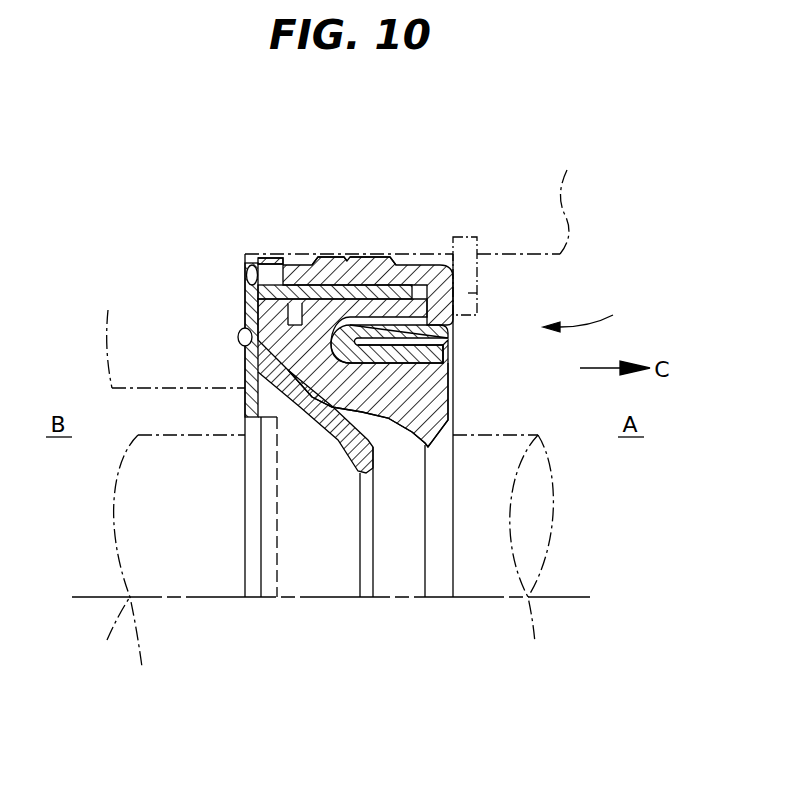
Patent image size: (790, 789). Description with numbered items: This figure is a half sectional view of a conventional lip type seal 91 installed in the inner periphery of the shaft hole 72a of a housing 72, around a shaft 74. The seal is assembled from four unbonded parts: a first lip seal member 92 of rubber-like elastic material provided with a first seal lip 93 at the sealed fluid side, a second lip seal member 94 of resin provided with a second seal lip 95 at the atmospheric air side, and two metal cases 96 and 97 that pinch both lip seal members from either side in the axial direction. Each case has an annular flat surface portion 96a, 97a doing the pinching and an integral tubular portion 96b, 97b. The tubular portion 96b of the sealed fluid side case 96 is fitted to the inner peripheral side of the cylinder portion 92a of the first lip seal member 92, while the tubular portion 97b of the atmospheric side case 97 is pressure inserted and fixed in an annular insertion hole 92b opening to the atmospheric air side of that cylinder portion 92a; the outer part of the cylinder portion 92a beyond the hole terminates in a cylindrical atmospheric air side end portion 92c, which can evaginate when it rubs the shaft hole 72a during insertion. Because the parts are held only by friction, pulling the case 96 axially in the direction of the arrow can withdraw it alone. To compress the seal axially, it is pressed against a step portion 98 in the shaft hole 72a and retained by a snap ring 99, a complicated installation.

The housing 72 is at (557, 193).
The shaft hole 72a is at (548, 272).
The shaft 74 is at (468, 585).
The lip type seal 91 is at (592, 319).
The first lip seal member 92 is at (423, 264).
The cylinder portion 92a is at (372, 257).
The insertion hole 92b is at (347, 261).
The atmospheric air side end portion 92c is at (258, 258).
The first seal lip 93 is at (432, 415).
The second lip seal member 94 is at (297, 417).
The second seal lip 95 is at (360, 473).
The case 96 is at (453, 318).
The flat surface portion 96a is at (455, 268).
The tubular portion 96b is at (395, 341).
The case 97 is at (246, 305).
The flat surface portion 97a is at (243, 357).
The tubular portion 97b is at (310, 265).
The step portion 98 is at (252, 272).
The snap ring 99 is at (470, 293).